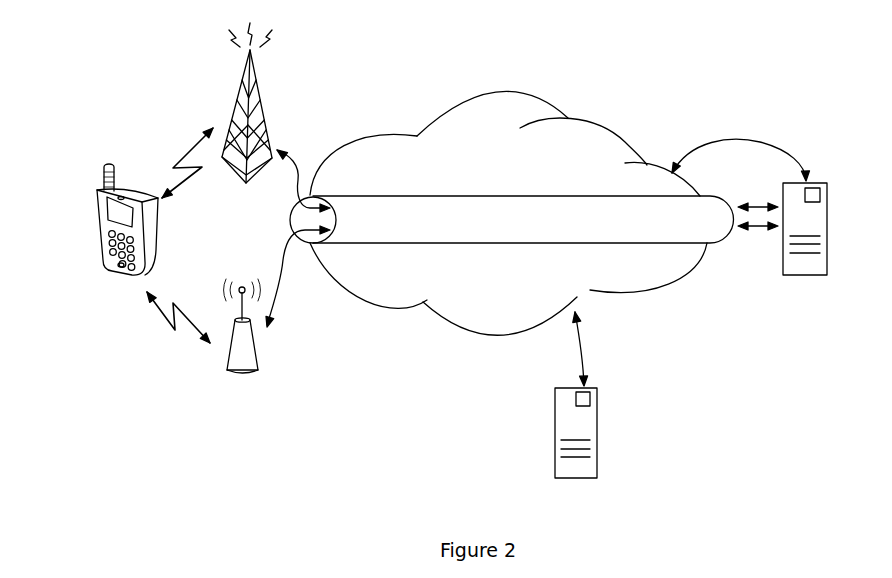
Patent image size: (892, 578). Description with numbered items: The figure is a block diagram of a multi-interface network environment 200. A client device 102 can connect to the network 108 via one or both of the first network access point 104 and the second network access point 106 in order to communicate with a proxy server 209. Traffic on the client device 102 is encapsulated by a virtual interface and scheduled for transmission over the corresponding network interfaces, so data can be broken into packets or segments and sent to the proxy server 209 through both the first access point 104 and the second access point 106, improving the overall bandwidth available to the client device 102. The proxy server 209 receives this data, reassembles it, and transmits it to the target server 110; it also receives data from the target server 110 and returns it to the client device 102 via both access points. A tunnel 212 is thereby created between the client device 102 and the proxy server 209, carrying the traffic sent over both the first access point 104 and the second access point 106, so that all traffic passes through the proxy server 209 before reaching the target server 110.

The client device 102 is at (100, 189).
The first network access point 104 is at (240, 87).
The second network access point 106 is at (242, 373).
The network 108 is at (517, 103).
The target server 110 is at (590, 454).
The proxy server 209 is at (816, 268).
The tunnel 212 is at (501, 200).
The multi-interface network environment 200 is at (782, 510).